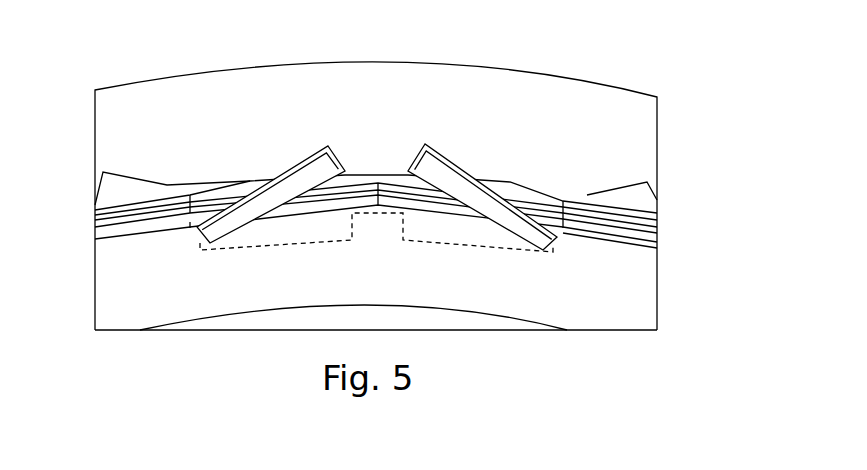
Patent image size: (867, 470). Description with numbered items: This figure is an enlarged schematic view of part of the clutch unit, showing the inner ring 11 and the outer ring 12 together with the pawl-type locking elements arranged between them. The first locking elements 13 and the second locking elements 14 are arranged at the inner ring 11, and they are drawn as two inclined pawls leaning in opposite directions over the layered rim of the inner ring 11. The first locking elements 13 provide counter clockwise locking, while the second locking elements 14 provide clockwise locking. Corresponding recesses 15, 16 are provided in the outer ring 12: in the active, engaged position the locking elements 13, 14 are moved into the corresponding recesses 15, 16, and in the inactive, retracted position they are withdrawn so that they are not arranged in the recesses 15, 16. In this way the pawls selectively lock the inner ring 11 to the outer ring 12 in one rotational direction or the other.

The inner ring 11 is at (620, 292).
The outer ring 12 is at (620, 103).
The first locking elements 13 is at (270, 190).
The second locking elements 14 is at (458, 185).
The recesses 15 is at (305, 160).
The recesses 16 is at (442, 157).